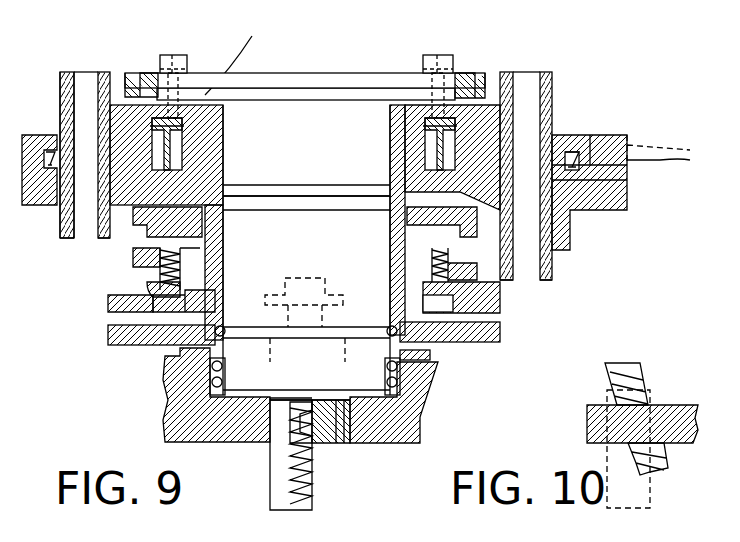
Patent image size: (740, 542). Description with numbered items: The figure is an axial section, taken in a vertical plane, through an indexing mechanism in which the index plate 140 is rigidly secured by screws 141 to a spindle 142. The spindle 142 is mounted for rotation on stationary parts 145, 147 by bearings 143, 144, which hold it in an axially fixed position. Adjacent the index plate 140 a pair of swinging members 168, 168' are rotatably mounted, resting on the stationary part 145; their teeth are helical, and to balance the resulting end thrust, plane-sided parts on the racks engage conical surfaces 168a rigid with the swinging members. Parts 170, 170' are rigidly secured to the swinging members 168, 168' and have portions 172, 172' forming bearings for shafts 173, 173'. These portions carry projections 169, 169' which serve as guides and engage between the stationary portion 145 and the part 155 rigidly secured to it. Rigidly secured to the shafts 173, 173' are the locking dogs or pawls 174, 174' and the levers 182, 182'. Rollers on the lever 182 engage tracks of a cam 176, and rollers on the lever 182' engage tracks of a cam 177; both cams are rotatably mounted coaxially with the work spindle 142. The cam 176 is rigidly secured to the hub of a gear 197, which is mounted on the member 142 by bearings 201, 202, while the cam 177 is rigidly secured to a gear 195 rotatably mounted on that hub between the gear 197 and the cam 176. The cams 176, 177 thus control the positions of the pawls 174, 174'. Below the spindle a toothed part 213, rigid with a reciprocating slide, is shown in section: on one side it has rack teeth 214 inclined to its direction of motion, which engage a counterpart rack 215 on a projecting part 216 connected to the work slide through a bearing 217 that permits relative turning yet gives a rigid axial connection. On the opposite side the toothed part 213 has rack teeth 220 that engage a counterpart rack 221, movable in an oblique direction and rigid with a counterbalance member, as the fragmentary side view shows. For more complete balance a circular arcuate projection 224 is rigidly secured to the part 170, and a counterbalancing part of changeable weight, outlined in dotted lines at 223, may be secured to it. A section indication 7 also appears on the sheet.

In FIG. 9, the locking dog or pawl 174 is at (46, 134).
In FIG. 9, the bearing portion 172 is at (46, 149).
In FIG. 9, the part secured to swinging member 170 is at (106, 134).
In FIG. 9, the screw 141 is at (185, 62).
In FIG. 9, the conical surface 168a is at (246, 54).
In FIG. 9, the swinging member 168 is at (282, 126).
In FIG. 9, the spindle 142 is at (290, 76).
In FIG. 9, the index plate 140 is at (456, 72).
In FIG. 9, the part secured to swinging member 170' is at (519, 162).
In FIG. 9, the locking dog or pawl 174' is at (573, 162).
In FIG. 9, the bearing portion 172' is at (597, 93).
In FIG. 9, the stationary part 155 is at (558, 150).
In FIG. 9, the guide projection 169' is at (589, 179).
In FIG. 9, the section line 7 is at (90, 124).
In FIG. 9, the counterbalancing part 223 is at (655, 114).
In FIG. 9, the circular arcuate projection 224 is at (627, 165).
In FIG. 9, the swinging member 168' is at (419, 220).
In FIG. 9, the bearing 143 is at (228, 180).
In FIG. 9, the stationary part 145 is at (380, 182).
In FIG. 9, the guide projection 169 is at (34, 177).
In FIG. 9, the lever 182 is at (61, 238).
In FIG. 9, the bearing 201 is at (230, 210).
In FIG. 9, the shaft 173 is at (67, 173).
In FIG. 9, the cam 176 is at (140, 215).
In FIG. 9, the cam 177 is at (160, 282).
In FIG. 9, the gear 195 is at (108, 303).
In FIG. 9, the gear 197 is at (108, 335).
In FIG. 9, the bearing 202 is at (222, 326).
In FIG. 9, the bearing 217 is at (330, 320).
In FIG. 9, the shaft 173' is at (570, 176).
In FIG. 9, the lever 182' is at (555, 271).
In FIG. 9, the stationary part 147 is at (165, 390).
In FIG. 9, the bearing 144 is at (400, 368).
In FIG. 9, the counterpart rack 221 is at (350, 420).
In FIG. 10, the counterpart rack 221 is at (638, 375).
In FIG. 9, the projecting part 216 is at (275, 447).
In FIG. 9, the counterpart rack 215 is at (300, 455).
In FIG. 9, the rack teeth 220 is at (340, 445).
In FIG. 9, the toothed part 213 is at (320, 443).
In FIG. 10, the toothed part 213 is at (670, 413).
In FIG. 9, the rack teeth 214 is at (305, 445).
In FIG. 10, the rack teeth 214 is at (590, 435).